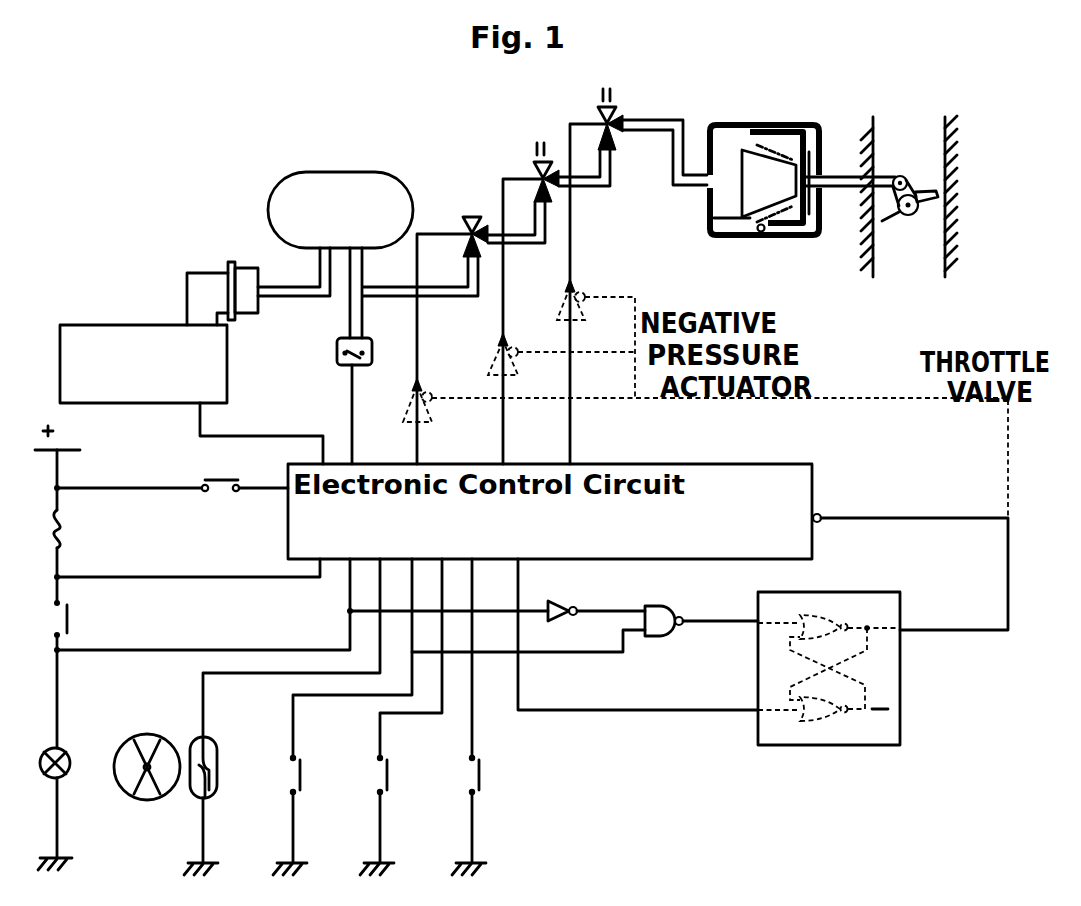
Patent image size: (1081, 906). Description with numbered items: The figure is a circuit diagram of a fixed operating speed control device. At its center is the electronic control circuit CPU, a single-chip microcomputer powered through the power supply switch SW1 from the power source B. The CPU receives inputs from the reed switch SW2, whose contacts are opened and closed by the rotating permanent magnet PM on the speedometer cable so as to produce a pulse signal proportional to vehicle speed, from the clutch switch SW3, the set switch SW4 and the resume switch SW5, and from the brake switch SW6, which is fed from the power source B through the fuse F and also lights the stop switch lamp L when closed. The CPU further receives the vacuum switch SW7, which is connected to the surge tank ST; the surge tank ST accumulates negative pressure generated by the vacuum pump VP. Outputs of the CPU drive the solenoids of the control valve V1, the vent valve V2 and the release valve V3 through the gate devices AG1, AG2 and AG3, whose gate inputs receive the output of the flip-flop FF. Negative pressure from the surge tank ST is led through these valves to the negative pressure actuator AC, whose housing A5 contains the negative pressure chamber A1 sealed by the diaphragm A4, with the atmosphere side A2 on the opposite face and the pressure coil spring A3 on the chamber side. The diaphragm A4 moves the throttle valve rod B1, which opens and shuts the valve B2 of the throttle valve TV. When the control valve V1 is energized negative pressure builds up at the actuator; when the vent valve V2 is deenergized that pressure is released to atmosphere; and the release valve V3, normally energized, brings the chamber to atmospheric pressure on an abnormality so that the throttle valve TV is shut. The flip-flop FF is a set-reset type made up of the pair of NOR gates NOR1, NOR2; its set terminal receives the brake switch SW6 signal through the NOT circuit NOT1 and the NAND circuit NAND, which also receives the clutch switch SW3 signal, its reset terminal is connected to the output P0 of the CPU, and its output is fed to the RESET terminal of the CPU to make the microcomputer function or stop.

The surge tank ST is at (340, 196).
The vacuum pump VP is at (191, 394).
The vacuum switch SW7 is at (329, 401).
The control valve V1 is at (452, 324).
The vent valve V2 is at (528, 298).
The release valve V3 is at (591, 270).
The negative pressure actuator AC is at (700, 242).
The negative pressure chamber A1 is at (748, 175).
The atmosphere side A2 is at (787, 130).
The pressure coil spring A3 is at (745, 130).
The diaphragm A4 is at (761, 234).
The housing A5 is at (803, 240).
The throttle valve rod B1 is at (840, 174).
The valve B2 is at (928, 192).
The throttle valve TV is at (917, 244).
The gate device AG1 is at (705, 448).
The gate device AG2 is at (531, 349).
The gate device AG3 is at (597, 328).
The power source B is at (58, 463).
The fuse F is at (41, 529).
The power supply switch SW1 is at (171, 506).
The brake switch SW6 is at (96, 619).
The stop switch lamp L is at (44, 803).
The permanent magnet PM is at (147, 750).
The reed switch SW2 is at (282, 717).
The clutch switch SW3 is at (342, 717).
The set switch SW4 is at (409, 717).
The resume switch SW5 is at (500, 717).
The electronic control circuit CPU is at (362, 541).
The output P0 is at (633, 619).
The RESET terminal RESET is at (855, 568).
The NOT circuit NOT1 is at (496, 596).
The NAND circuit NAND is at (585, 612).
The flip-flop FF is at (851, 674).
The NOR gate NOR1 is at (845, 632).
The NOR gate NOR2 is at (832, 710).